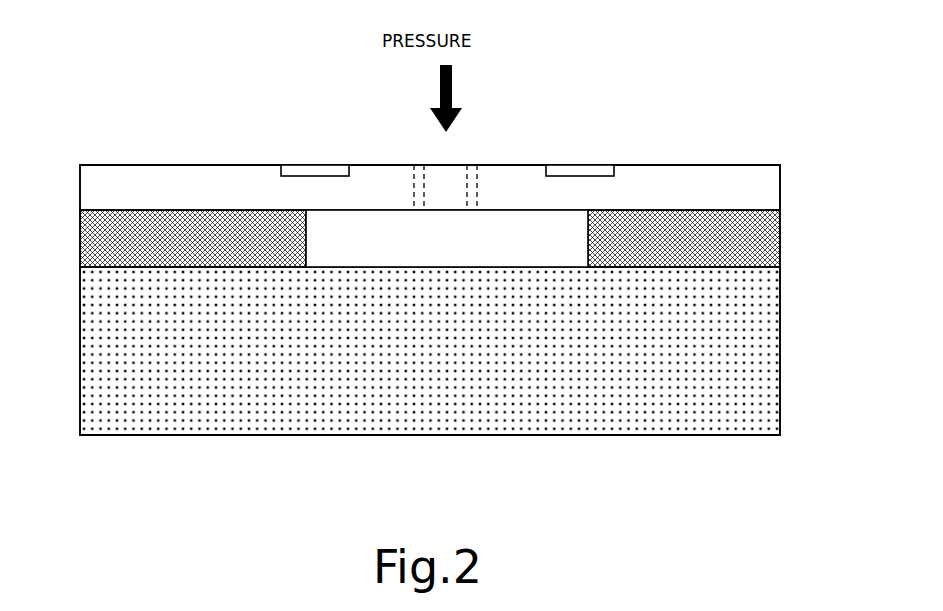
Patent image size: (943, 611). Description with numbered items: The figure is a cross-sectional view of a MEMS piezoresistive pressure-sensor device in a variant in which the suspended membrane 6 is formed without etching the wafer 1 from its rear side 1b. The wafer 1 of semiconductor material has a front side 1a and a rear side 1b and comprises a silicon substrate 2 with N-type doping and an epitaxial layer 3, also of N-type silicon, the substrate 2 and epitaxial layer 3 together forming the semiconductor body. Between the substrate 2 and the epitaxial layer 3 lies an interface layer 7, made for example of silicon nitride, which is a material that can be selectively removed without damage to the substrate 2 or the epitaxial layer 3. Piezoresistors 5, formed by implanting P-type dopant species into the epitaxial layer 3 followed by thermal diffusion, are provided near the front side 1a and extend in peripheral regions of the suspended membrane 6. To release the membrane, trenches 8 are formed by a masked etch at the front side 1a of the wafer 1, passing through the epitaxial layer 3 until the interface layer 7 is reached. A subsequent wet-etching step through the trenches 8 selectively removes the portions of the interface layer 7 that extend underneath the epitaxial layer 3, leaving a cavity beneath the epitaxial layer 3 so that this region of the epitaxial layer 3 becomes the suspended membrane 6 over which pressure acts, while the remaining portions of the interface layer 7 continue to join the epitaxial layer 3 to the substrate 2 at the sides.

The wafer 1 is at (797, 322).
The front side 1a is at (747, 160).
The rear side 1b is at (724, 441).
The silicon substrate 2 is at (772, 401).
The epitaxial layer 3 is at (767, 176).
The piezoresistors 5 is at (295, 170).
The suspended membrane 6 is at (397, 233).
The interface layer 7 is at (100, 238).
The trenches 8 is at (418, 165).